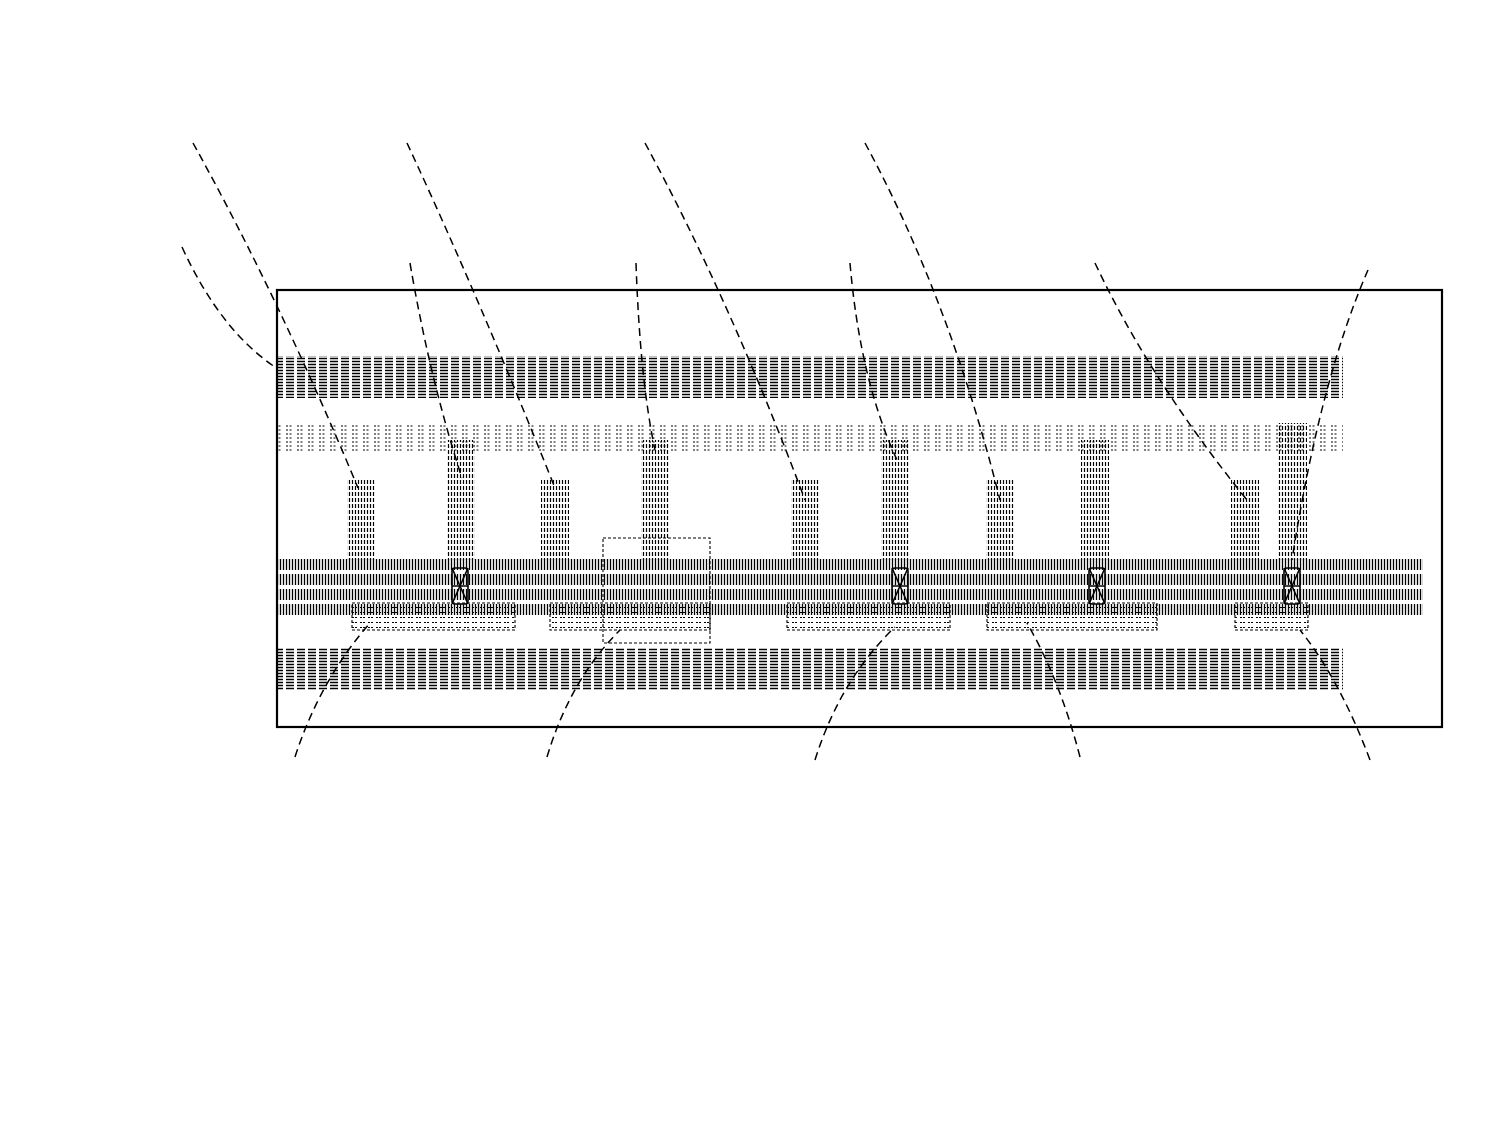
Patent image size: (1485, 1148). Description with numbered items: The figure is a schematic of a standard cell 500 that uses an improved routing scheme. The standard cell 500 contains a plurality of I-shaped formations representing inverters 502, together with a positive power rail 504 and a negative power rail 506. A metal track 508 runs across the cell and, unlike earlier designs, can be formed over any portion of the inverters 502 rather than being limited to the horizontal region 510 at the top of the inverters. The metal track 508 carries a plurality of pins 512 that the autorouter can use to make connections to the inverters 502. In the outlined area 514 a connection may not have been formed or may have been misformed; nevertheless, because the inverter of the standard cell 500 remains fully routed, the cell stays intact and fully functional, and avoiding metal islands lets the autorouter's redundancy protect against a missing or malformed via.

The standard cell 500 is at (1290, 200).
The inverters 502 is at (395, 437).
The positive power rail 504 is at (1300, 450).
The negative power rail 506 is at (495, 690).
The metal track 508 is at (298, 560).
The horizontal region 510 is at (258, 362).
The pins 512 is at (403, 767).
The outlined area 514 is at (653, 643).